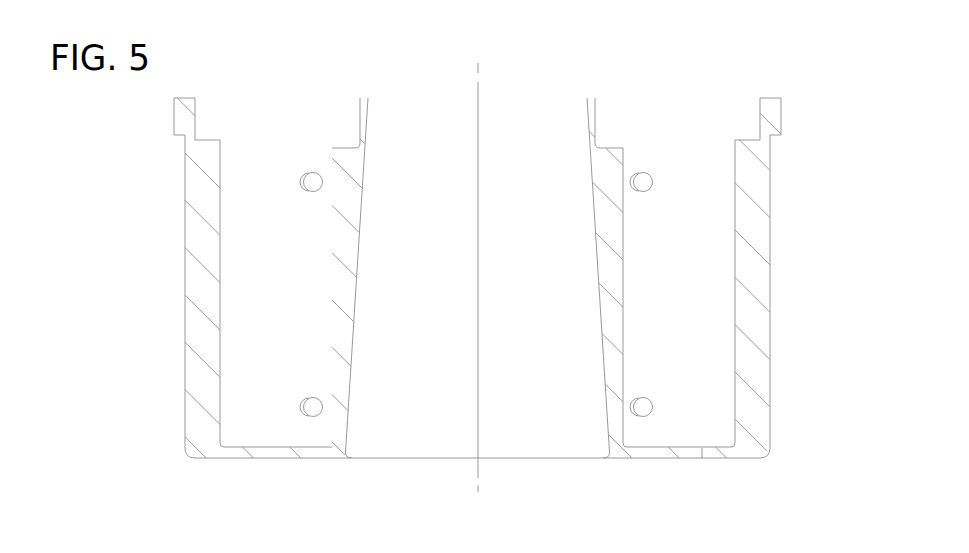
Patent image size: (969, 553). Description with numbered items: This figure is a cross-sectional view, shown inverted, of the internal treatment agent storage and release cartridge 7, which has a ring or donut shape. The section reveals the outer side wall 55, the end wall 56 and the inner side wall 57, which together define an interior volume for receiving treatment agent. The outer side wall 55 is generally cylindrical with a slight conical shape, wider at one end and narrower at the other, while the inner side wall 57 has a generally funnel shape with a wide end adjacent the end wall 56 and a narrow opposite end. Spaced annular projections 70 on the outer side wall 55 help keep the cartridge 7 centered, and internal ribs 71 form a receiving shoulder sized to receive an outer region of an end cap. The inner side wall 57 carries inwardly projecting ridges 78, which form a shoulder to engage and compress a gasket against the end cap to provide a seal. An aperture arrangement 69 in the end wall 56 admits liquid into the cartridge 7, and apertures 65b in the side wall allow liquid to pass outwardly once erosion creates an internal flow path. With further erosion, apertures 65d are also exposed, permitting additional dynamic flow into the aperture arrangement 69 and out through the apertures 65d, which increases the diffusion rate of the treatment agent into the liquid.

The treatment agent storage and release cartridge 7 is at (797, 405).
The outer side wall 55 is at (768, 202).
The end wall 56 is at (715, 448).
The inner side wall 57 is at (603, 320).
The apertures 65b is at (310, 404).
The apertures 65d is at (311, 176).
The aperture arrangement 69 is at (687, 455).
The annular projections 70 is at (181, 121).
The internal ribs 71 is at (208, 324).
The inwardly projecting ridges 78 is at (337, 240).